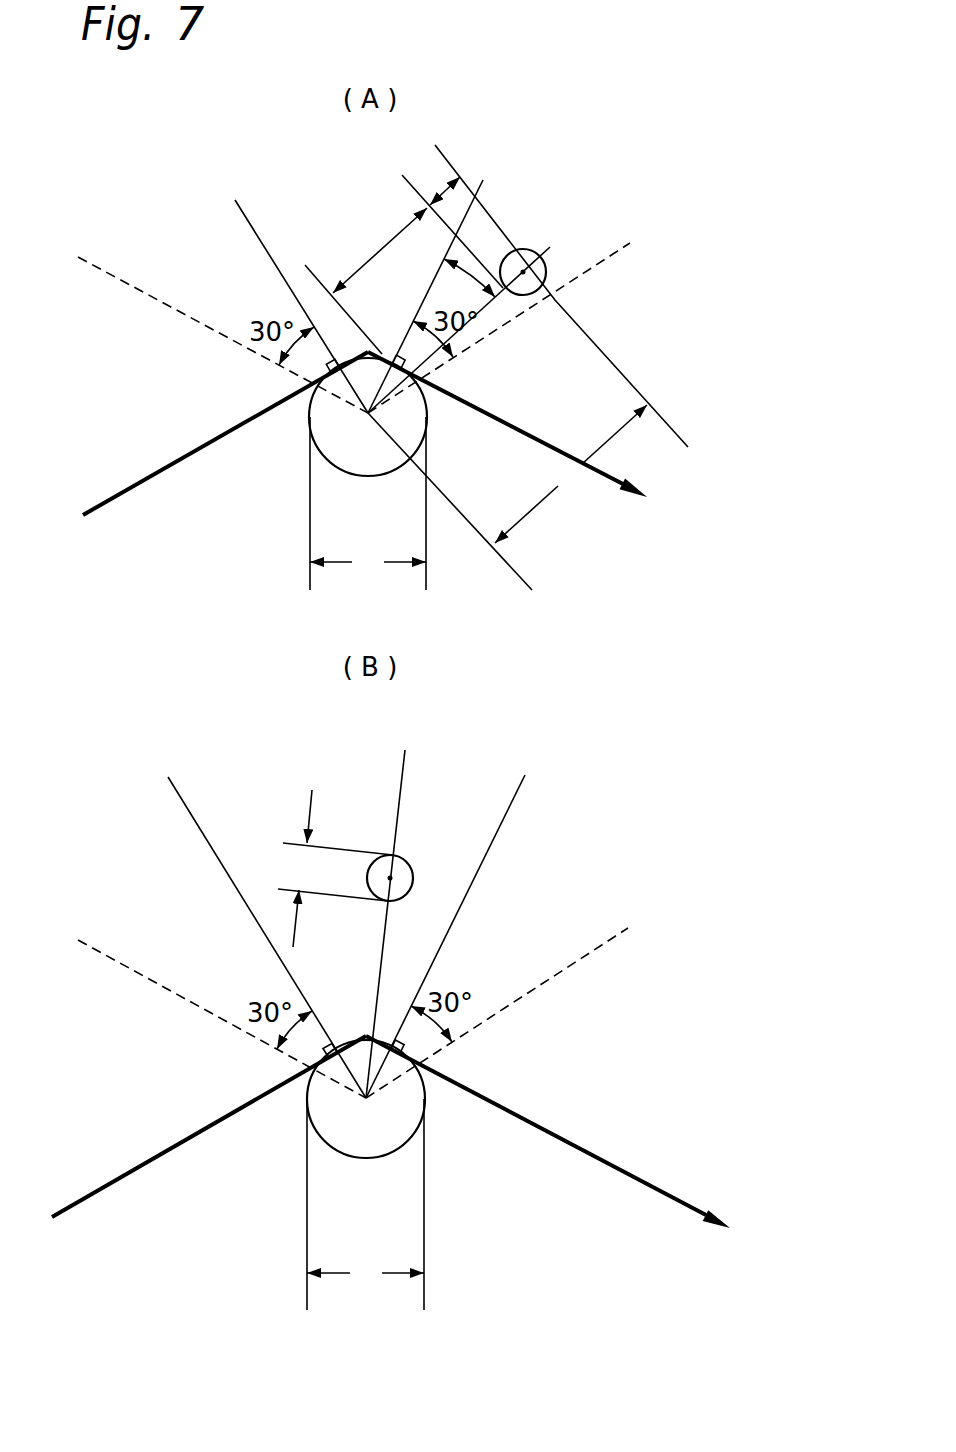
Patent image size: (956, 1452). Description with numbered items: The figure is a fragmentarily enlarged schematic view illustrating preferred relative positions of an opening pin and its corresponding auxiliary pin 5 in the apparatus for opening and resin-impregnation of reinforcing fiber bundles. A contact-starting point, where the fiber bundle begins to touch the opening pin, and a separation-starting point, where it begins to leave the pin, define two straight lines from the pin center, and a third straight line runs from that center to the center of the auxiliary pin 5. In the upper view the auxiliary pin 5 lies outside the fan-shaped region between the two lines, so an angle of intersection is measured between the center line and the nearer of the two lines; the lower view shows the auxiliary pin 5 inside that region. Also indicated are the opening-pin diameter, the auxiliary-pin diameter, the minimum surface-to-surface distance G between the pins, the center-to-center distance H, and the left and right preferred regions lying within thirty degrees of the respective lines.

The auxiliary pin 5 is at (413, 879).
The minimum surface-to-surface distance G is at (380, 250).
The center-to-center distance H is at (571, 474).